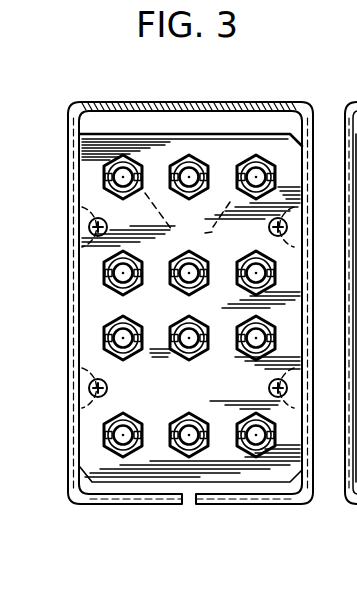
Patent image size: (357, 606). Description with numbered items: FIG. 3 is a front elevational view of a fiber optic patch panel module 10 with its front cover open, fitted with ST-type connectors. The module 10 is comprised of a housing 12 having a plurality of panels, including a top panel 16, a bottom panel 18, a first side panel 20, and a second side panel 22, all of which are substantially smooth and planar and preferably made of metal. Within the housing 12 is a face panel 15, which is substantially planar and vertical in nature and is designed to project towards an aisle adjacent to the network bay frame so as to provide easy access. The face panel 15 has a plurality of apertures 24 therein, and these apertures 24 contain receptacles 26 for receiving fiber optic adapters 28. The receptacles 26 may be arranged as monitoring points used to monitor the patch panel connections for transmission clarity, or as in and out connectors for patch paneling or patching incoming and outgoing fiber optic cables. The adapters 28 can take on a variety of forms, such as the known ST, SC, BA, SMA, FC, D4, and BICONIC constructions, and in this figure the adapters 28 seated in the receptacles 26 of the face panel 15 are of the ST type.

The module 10 is at (170, 96).
The housing 12 is at (111, 508).
The face panel 15 is at (88, 424).
The top panel 16 is at (257, 102).
The bottom panel 18 is at (283, 505).
The first side panel 20 is at (322, 488).
The second side panel 22 is at (71, 481).
The apertures 24 is at (187, 221).
The receptacles 26 is at (77, 172).
The fiber optic adapters 28 is at (243, 412).